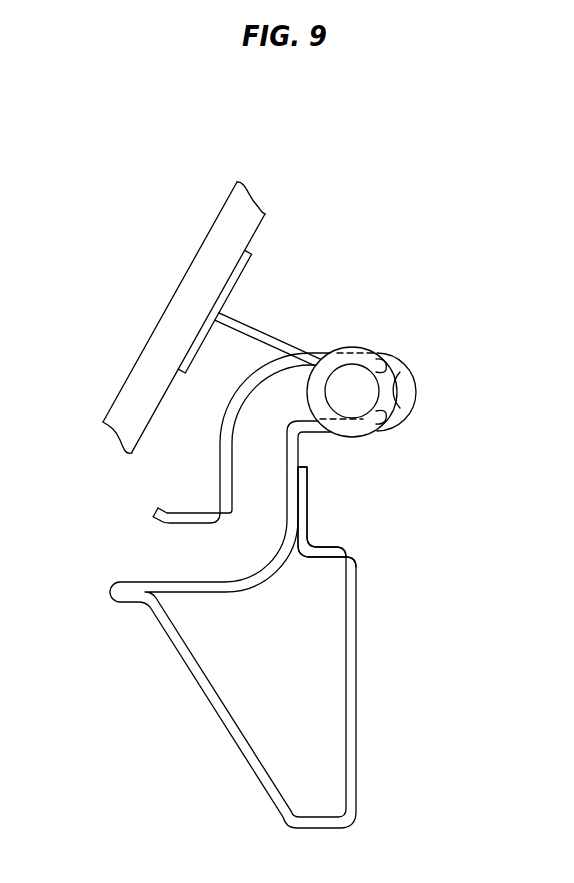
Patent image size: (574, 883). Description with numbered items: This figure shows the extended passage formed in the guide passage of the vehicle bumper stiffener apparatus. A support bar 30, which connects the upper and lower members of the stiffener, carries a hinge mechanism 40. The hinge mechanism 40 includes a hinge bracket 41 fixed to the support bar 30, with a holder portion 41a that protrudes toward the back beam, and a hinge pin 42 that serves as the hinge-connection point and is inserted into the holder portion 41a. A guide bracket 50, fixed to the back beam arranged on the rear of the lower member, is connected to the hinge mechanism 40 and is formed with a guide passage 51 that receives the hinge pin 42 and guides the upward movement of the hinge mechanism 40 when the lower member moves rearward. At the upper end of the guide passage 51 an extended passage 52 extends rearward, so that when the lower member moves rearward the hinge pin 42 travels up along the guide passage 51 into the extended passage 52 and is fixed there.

The support bar 30 is at (160, 337).
The hinge mechanism 40 is at (298, 295).
The hinge bracket 41 is at (240, 278).
The holder portion 41a is at (356, 347).
The hinge pin 42 is at (367, 397).
The guide bracket 50 is at (348, 657).
The guide passage 51 is at (286, 505).
The extended passage 52 is at (410, 373).